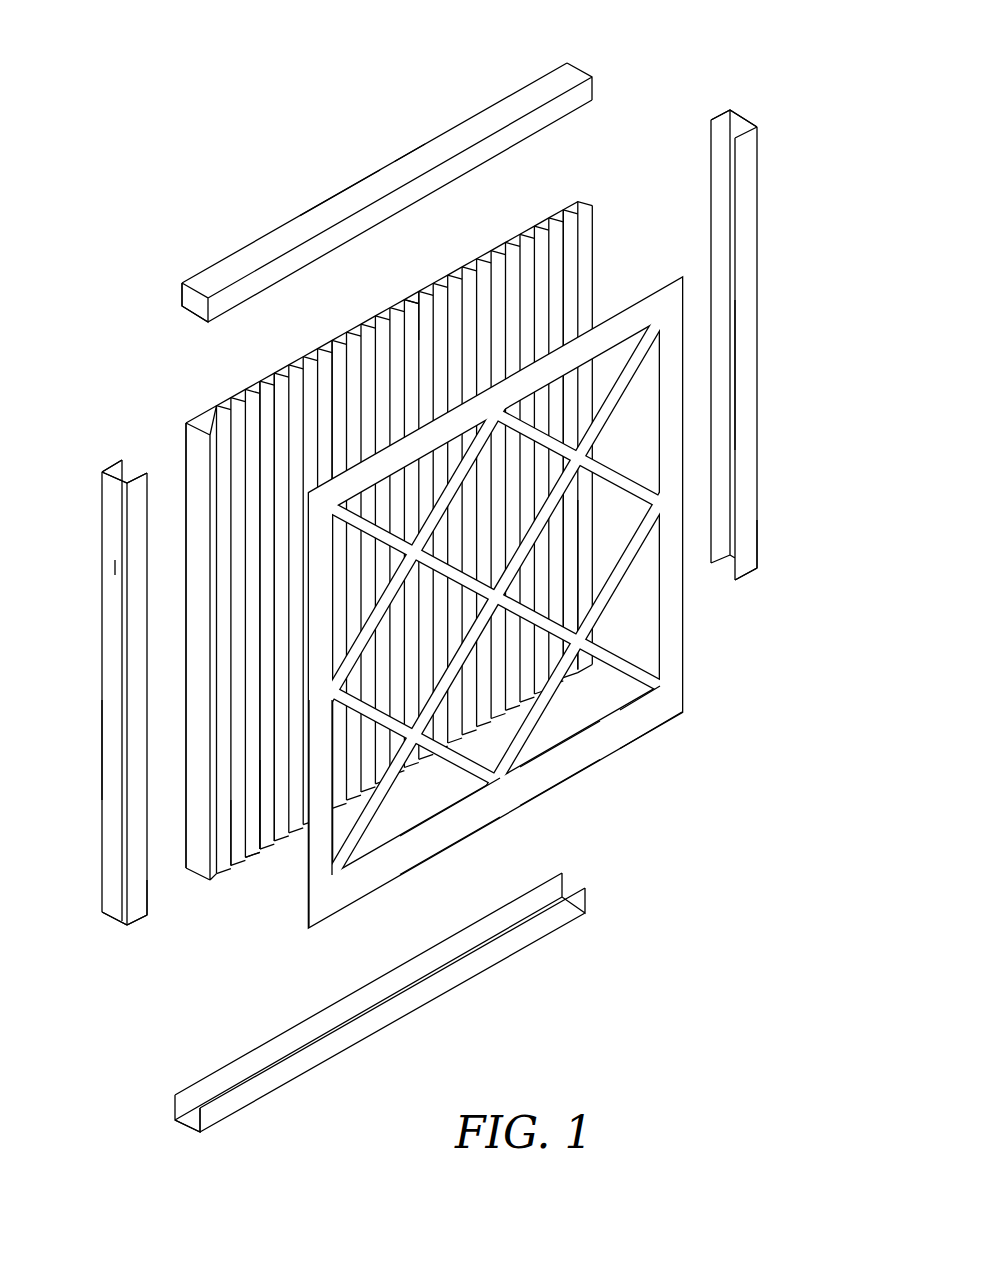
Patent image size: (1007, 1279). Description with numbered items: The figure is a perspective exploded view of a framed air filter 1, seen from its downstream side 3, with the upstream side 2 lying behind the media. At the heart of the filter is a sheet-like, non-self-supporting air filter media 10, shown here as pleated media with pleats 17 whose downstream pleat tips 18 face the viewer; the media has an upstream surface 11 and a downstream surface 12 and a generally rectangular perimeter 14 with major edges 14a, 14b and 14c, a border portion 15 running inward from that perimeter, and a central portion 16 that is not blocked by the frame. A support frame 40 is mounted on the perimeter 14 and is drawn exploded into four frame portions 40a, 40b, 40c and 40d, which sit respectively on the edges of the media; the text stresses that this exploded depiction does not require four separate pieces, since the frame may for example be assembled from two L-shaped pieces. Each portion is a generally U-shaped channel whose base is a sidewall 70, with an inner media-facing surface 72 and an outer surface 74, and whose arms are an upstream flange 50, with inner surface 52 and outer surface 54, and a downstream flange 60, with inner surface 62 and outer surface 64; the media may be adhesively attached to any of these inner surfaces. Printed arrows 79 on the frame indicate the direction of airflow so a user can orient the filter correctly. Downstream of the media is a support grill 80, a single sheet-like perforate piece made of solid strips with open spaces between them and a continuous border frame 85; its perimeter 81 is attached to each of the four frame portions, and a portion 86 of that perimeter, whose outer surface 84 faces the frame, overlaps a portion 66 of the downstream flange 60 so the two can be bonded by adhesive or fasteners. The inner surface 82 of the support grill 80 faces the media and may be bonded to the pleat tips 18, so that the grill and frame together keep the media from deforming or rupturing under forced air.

The framed air filter 1 is at (150, 93).
The upstream side 2 is at (152, 240).
The downstream side 3 is at (673, 910).
The non-self-supporting air filter media 10 is at (583, 205).
The upstream surface 11 is at (275, 376).
The downstream surface 12 is at (597, 229).
The perimeter 14 is at (228, 864).
The major edge of perimeter 14a is at (184, 441).
The major edge of perimeter 14b is at (594, 555).
The major edge of perimeter 14c is at (333, 356).
The border portion 15 is at (260, 853).
The portion of air filter media not blocked by frame 16 is at (282, 532).
The pleats 17 is at (419, 306).
The downstream pleat tips 18 is at (566, 268).
The support frame 40 is at (538, 80).
The frame portion 40a is at (101, 645).
The frame portion 40b is at (760, 221).
The frame portion 40c is at (472, 116).
The frame portion 40d is at (286, 1086).
The upstream flange 50 is at (117, 466).
The inner surface of upstream flange 52 is at (716, 126).
The outer surface of upstream flange 54 is at (182, 291).
The downstream flange 60 is at (127, 930).
The inner surface of downstream flange 62 is at (183, 1128).
The outer surface of downstream flange 64 is at (760, 545).
The portion of downstream flange 66 is at (148, 897).
The sidewall 70 is at (333, 208).
The inner surface of sidewall 72 is at (736, 376).
The outer surface of sidewall 74 is at (104, 736).
The arrows 79 is at (404, 172).
The support grill 80 is at (547, 710).
The perimeter of support grill 81 is at (656, 728).
The inner surface of support grill 82 is at (679, 290).
The outer surface of support grill 84 is at (437, 840).
The continuous border frame 85 is at (553, 778).
The portion of support grill perimeter 86 is at (323, 840).